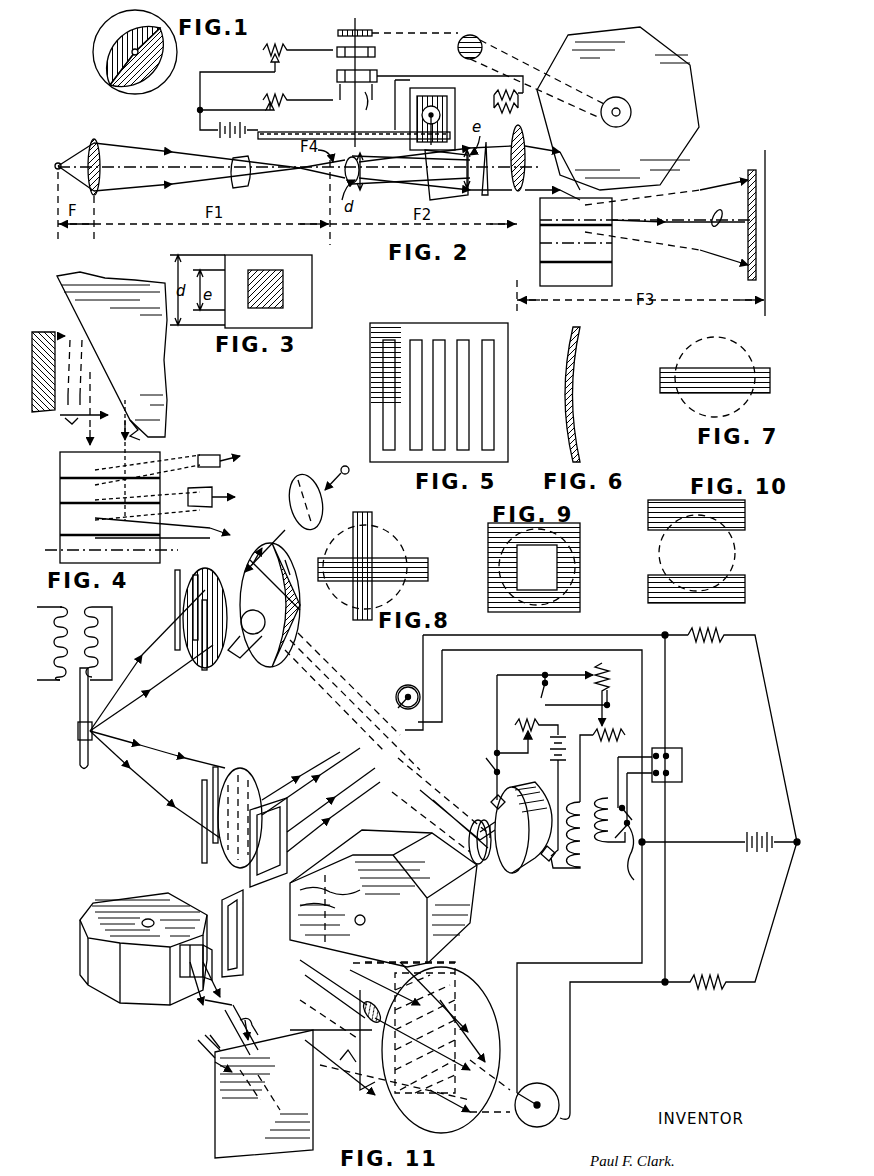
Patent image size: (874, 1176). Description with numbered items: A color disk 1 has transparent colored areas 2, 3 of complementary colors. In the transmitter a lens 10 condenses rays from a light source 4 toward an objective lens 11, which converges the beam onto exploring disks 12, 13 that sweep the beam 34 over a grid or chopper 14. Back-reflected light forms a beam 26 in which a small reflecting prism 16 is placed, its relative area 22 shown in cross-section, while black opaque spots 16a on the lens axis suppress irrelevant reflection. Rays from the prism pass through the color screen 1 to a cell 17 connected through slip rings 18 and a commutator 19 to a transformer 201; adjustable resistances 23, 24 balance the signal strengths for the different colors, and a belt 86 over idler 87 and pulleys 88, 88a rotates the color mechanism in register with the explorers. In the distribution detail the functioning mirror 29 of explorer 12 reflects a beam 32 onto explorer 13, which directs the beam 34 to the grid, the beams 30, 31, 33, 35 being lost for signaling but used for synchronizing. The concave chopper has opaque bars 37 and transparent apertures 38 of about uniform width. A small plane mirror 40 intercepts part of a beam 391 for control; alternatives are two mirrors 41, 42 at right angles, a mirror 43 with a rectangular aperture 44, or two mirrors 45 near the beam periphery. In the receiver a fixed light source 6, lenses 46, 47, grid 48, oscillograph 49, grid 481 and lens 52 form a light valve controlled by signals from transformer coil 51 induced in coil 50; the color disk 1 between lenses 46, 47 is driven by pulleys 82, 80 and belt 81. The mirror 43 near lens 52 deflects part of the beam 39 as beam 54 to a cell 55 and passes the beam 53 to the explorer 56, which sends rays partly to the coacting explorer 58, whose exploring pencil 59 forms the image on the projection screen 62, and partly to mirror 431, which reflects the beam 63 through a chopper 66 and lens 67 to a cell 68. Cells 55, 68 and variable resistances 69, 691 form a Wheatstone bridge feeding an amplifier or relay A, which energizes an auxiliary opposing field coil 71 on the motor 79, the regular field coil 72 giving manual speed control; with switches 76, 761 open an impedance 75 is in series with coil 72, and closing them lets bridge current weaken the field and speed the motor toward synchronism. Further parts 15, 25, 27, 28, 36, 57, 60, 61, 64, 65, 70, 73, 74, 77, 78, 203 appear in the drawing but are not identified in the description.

In FIG. 1, the disk 1 is at (100, 44).
In FIG. 2, the disk 1 is at (268, 139).
In FIG. 11, the disk 1 is at (290, 610).
In FIG. 1, the transparent colored area 2 is at (110, 53).
In FIG. 1, the transparent colored area 3 is at (125, 86).
In FIG. 2, the light source 4 is at (70, 167).
In FIG. 11, the fixed light source 6 is at (337, 469).
In FIG. 2, the lens 10 is at (216, 158).
In FIG. 2, the objective lens 11 is at (522, 146).
In FIG. 2, the exploring disk 12 is at (618, 108).
In FIG. 4, the exploring disk 12 is at (112, 354).
In FIG. 2, the exploring disk 13 is at (612, 258).
In FIG. 4, the exploring disk 13 is at (70, 545).
In FIG. 2, the grid or chopper 14 is at (750, 170).
In FIG. 2, the image plane 15 is at (765, 168).
In FIG. 2, the reflecting prism 16 is at (425, 165).
In FIG. 2, the black opaque spots 16a is at (498, 192).
In FIG. 2, the cell 17 is at (440, 110).
In FIG. 2, the slip rings 18 is at (376, 52).
In FIG. 2, the commutator 19 is at (385, 72).
In FIG. 2, the relative area occupied by the prism 22 is at (381, 106).
In FIG. 2, the adjustable resistance 23 is at (298, 52).
In FIG. 2, the adjustable resistance 24 is at (298, 95).
In FIG. 2, the battery 25 is at (233, 112).
In FIG. 2, the beam 26 is at (246, 182).
In FIG. 3, the beam 26 is at (286, 295).
In FIG. 3, the frame 27 is at (285, 302).
In FIG. 4, the light ray 28 is at (72, 336).
In FIG. 4, the functioning mirror 29 is at (118, 398).
In FIG. 4, the light beam 30 is at (62, 430).
In FIG. 4, the light beam 31 is at (150, 452).
In FIG. 4, the beam 32 is at (165, 450).
In FIG. 4, the light beam 33 is at (221, 467).
In FIG. 2, the beam 34 is at (720, 212).
In FIG. 4, the beam 34 is at (214, 504).
In FIG. 4, the light beam 35 is at (162, 537).
In FIG. 5, the grating plate 36 is at (424, 392).
In FIG. 6, the grating plate 36 is at (564, 394).
In FIG. 5, the opaque bars 37 is at (392, 358).
In FIG. 5, the transparent apertures 38 is at (388, 380).
In FIG. 11, the beam 39 is at (247, 860).
In FIG. 7, the beam 391 is at (684, 360).
In FIG. 8, the beam 391 is at (385, 555).
In FIG. 9, the beam 391 is at (575, 555).
In FIG. 10, the beam 391 is at (730, 560).
In FIG. 7, the small plane mirror 40 is at (668, 381).
In FIG. 8, the mirror 41 is at (370, 520).
In FIG. 8, the mirror 42 is at (410, 568).
In FIG. 9, the mirror 43 is at (505, 582).
In FIG. 11, the mirror 43 is at (287, 815).
In FIG. 11, the mirror 431 is at (207, 862).
In FIG. 9, the rectangular aperture 44 is at (535, 563).
In FIG. 10, the mirrors 45 is at (740, 515).
In FIG. 11, the lens 46 is at (306, 474).
In FIG. 11, the lens 47 is at (226, 575).
In FIG. 11, the grid 48 is at (203, 680).
In FIG. 11, the grid 481 is at (222, 770).
In FIG. 11, the oscillograph 49 is at (132, 714).
In FIG. 11, the coil 50 is at (88, 622).
In FIG. 11, the transformer coil 51 is at (64, 658).
In FIG. 11, the lens 52 is at (255, 783).
In FIG. 11, the beam 53 is at (333, 810).
In FIG. 11, the beam 54 is at (341, 727).
In FIG. 11, the cell 55 is at (401, 683).
In FIG. 11, the explorer 56 is at (330, 887).
In FIG. 11, the pivot 57 is at (332, 910).
In FIG. 11, the explorer 58 is at (155, 923).
In FIG. 11, the exploring pencil of rays 59 is at (215, 1018).
In FIG. 11, the ray 60 is at (215, 1062).
In FIG. 11, the ray 61 is at (258, 1027).
In FIG. 11, the projection screen 62 is at (264, 1081).
In FIG. 11, the beam 63 is at (366, 1018).
In FIG. 11, the drum 64 is at (395, 968).
In FIG. 11, the ray 65 is at (340, 1067).
In FIG. 11, the chopper 66 is at (452, 970).
In FIG. 11, the lens 67 is at (470, 1000).
In FIG. 11, the cell 68 is at (545, 1090).
In FIG. 11, the variable resistance 69 is at (678, 877).
In FIG. 11, the variable resistance 691 is at (601, 735).
In FIG. 11, the battery 70 is at (719, 833).
In FIG. 11, the auxiliary opposing field coil 71 is at (624, 815).
In FIG. 11, the regular field coil 72 is at (567, 849).
In FIG. 11, the resistor 73 is at (602, 765).
In FIG. 11, the battery 74 is at (547, 796).
In FIG. 11, the impedance 75 is at (564, 694).
In FIG. 11, the switch 76 is at (575, 691).
In FIG. 11, the switch 761 is at (618, 861).
In FIG. 11, the rheostat 77 is at (527, 715).
In FIG. 11, the switch 78 is at (502, 776).
In FIG. 11, the motor 79 is at (517, 868).
In FIG. 11, the pulley 80 is at (488, 870).
In FIG. 11, the belt 81 is at (440, 805).
In FIG. 11, the pulley 82 is at (270, 672).
In FIG. 2, the belt 86 is at (538, 58).
In FIG. 2, the idler 87 is at (473, 60).
In FIG. 2, the pulley 88 is at (622, 103).
In FIG. 2, the pulley 88a is at (373, 32).
In FIG. 2, the transformer 201 is at (513, 112).
In FIG. 2, the shaft 203 is at (355, 110).
In FIG. 11, the amplifier or relay A is at (675, 765).